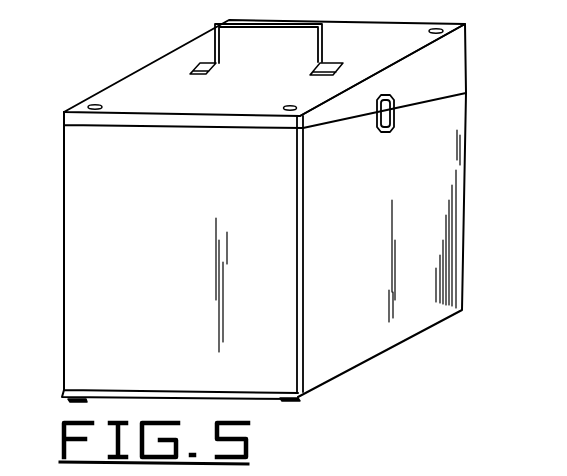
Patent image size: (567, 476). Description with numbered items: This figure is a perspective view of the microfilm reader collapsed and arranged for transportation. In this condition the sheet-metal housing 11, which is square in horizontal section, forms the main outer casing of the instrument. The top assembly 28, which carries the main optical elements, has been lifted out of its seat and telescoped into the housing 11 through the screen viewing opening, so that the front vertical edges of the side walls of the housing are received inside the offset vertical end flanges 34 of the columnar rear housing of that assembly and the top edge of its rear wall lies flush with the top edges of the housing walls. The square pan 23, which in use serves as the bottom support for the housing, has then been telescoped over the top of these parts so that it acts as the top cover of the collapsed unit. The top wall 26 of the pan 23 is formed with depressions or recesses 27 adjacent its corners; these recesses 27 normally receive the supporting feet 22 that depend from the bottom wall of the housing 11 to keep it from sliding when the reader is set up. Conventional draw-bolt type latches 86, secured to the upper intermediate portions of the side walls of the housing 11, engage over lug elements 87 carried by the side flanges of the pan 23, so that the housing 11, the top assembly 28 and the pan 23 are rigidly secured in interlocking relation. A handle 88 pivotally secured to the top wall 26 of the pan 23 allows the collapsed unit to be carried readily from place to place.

The housing 11 is at (266, 212).
The supporting feet 22 is at (80, 399).
The square pan 23 is at (468, 54).
The top wall 26 is at (162, 70).
The depressions or recesses 27 is at (95, 105).
The top assembly 28 is at (63, 260).
The vertical end flanges 34 is at (299, 285).
The latches 86 is at (395, 120).
The lug elements 87 is at (393, 102).
The handle 88 is at (324, 41).